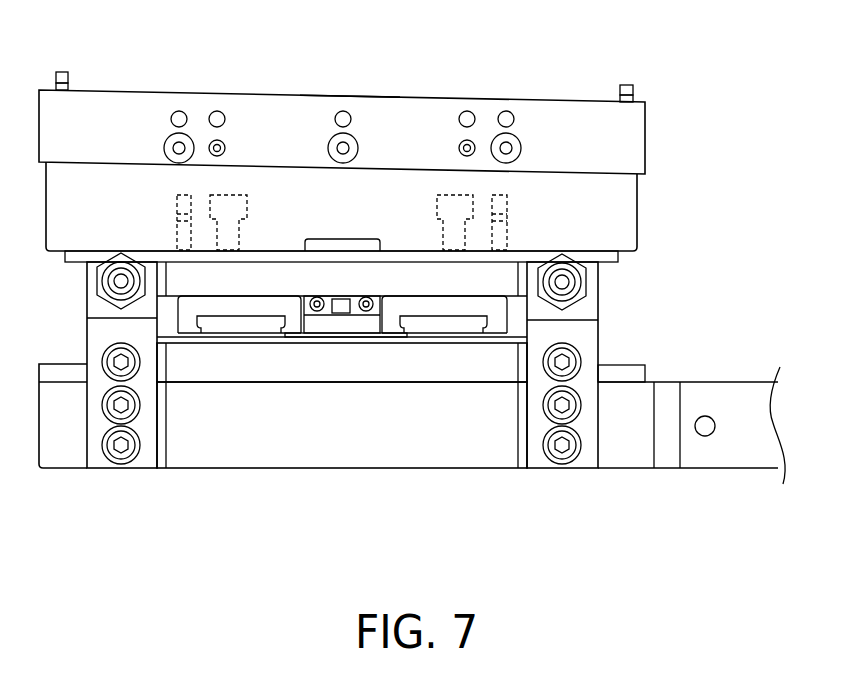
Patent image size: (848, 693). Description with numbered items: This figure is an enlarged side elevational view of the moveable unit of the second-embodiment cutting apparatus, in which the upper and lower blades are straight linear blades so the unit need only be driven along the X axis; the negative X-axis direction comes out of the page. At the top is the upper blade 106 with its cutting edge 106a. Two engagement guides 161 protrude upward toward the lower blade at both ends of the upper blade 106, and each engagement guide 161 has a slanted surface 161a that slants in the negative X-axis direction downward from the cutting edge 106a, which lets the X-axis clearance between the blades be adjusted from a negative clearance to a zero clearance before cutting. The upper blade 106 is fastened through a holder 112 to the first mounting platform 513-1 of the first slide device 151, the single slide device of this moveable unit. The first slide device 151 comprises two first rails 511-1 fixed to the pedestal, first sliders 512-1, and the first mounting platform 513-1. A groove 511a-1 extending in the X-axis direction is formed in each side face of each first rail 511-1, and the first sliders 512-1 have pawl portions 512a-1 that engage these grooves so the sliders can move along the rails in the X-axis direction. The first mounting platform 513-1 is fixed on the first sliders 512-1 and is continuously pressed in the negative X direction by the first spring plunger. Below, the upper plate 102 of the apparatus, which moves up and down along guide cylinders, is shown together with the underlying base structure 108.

The upper blade 106 is at (175, 92).
The cutting edge 106a is at (333, 96).
The engagement guide 161 is at (54, 78).
The slanted surface 161a is at (72, 72).
The holder 112 is at (622, 220).
The first mounting platform 513-1 is at (180, 284).
The first slide device 151 is at (516, 311).
The first slider 512-1 is at (228, 308).
The pawl portion 512a-1 is at (372, 334).
The first rail 511-1 is at (212, 334).
The groove 511a-1 is at (397, 334).
The movable stage 108 is at (277, 372).
The upper plate 102 is at (230, 468).